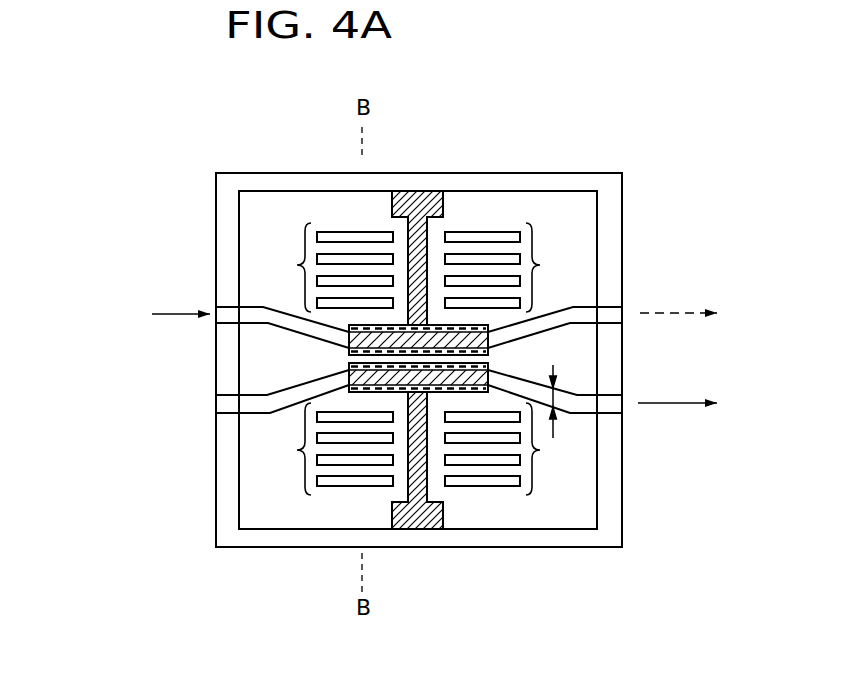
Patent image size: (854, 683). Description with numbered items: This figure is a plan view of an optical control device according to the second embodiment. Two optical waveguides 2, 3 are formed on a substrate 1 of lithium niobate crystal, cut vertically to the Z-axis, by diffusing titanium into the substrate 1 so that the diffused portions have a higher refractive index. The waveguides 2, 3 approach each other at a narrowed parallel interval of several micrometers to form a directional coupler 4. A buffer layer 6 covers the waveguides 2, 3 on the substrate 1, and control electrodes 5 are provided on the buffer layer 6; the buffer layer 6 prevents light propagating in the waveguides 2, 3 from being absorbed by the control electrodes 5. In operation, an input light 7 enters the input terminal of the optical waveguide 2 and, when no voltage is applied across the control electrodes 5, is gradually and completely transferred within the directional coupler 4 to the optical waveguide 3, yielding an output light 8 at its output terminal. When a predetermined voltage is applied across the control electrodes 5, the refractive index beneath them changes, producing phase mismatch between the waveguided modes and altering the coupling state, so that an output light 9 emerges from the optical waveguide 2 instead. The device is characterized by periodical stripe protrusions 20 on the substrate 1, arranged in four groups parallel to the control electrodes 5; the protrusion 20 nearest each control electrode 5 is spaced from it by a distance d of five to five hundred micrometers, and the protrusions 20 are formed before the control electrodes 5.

The substrate 1 is at (607, 190).
The optical waveguide 2 is at (246, 305).
The optical waveguide 3 is at (267, 404).
The directional coupler 4 is at (462, 325).
The control electrode 5 is at (415, 205).
The buffer layer 6 is at (563, 512).
The input light 7 is at (180, 318).
The output light 8 is at (680, 408).
The output light 9 is at (677, 312).
The stripe protrusion 20 is at (645, 492).
The distance d is at (565, 397).